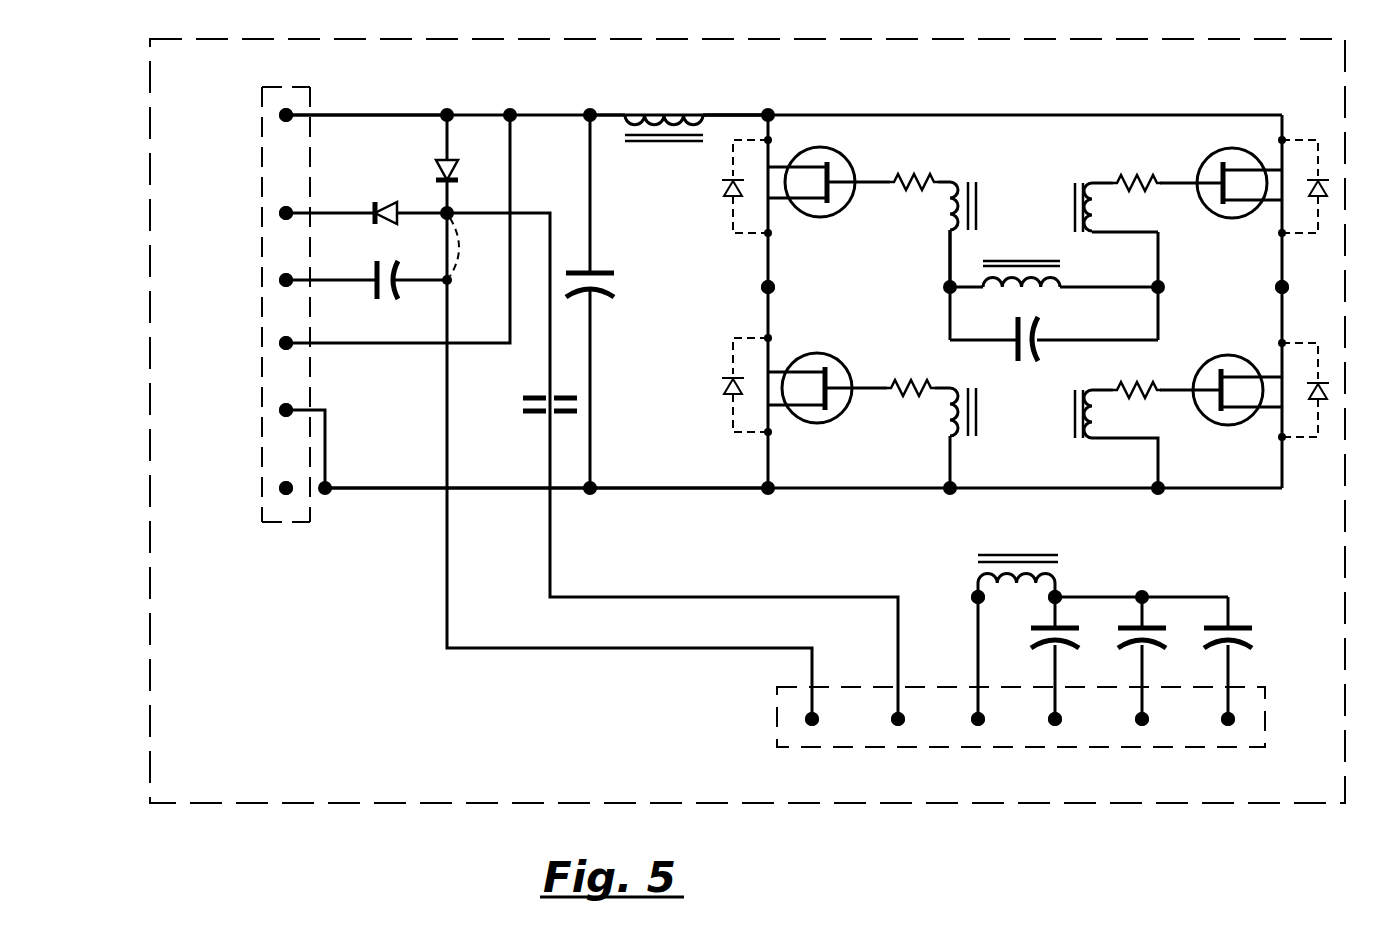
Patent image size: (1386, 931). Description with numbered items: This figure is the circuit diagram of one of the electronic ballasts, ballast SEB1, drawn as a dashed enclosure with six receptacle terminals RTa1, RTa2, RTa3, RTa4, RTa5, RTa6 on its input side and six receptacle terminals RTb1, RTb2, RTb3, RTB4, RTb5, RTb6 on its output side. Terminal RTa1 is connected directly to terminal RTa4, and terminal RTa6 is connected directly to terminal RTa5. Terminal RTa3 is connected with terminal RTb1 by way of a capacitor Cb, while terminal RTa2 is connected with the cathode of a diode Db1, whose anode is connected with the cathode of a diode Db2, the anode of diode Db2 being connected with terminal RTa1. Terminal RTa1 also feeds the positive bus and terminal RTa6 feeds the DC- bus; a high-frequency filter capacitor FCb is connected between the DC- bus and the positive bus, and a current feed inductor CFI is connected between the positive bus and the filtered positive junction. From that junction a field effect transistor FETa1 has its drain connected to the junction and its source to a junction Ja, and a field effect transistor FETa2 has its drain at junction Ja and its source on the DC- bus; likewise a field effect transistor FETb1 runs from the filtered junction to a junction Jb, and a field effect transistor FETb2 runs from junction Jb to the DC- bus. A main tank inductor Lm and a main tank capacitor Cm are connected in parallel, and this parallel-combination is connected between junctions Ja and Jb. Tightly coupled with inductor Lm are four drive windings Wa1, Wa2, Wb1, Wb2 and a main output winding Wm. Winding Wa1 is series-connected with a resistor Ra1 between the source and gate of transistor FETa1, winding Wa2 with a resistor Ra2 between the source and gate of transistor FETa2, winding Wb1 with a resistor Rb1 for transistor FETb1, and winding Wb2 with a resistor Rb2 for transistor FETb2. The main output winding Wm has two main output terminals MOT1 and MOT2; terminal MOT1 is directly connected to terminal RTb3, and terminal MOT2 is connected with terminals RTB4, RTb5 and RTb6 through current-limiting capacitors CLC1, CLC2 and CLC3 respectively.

The electronic ballast SEB1 is at (470, 815).
The receptacle terminal RTa1 is at (268, 115).
The receptacle terminal RTa2 is at (268, 213).
The receptacle terminal RTa3 is at (268, 281).
The receptacle terminal RTa4 is at (268, 343).
The receptacle terminal RTa5 is at (266, 411).
The receptacle terminal RTa6 is at (264, 489).
The DC− bus DC- is at (426, 492).
The diode Db2 is at (436, 164).
The diode Db1 is at (390, 202).
The capacitor Cb is at (398, 272).
The high-frequency filter capacitor FCb is at (600, 296).
The current feed inductor CFI is at (668, 144).
The junction Ja is at (764, 290).
The junction Jb is at (1285, 287).
The field effect transistor FETa1 is at (832, 218).
The field effect transistor FETa2 is at (853, 330).
The field effect transistor FETb1 is at (1244, 217).
The field effect transistor FETb2 is at (1250, 330).
The resistor Ra1 is at (903, 178).
The resistor Ra2 is at (901, 398).
The resistor Rb1 is at (1130, 180).
The resistor Rb2 is at (1146, 384).
The drive winding Wa1 is at (947, 212).
The drive winding Wa2 is at (950, 422).
The drive winding Wb1 is at (1105, 212).
The drive winding Wb2 is at (1100, 417).
The main tank inductor Lm is at (1023, 258).
The main tank capacitor Cm is at (1032, 365).
The main output winding Wm is at (1020, 555).
The main output terminal MOT1 is at (973, 597).
The main output terminal MOT2 is at (1060, 597).
The current-limiting capacitor CLC1 is at (1030, 638).
The current-limiting capacitor CLC2 is at (1120, 638).
The current-limiting capacitor CLC3 is at (1208, 638).
The receptacle terminal RTb1 is at (812, 726).
The receptacle terminal RTb2 is at (898, 726).
The receptacle terminal RTb3 is at (978, 726).
The receptacle terminal RTB4 is at (1055, 726).
The receptacle terminal RTb5 is at (1142, 726).
The receptacle terminal RTb6 is at (1228, 726).